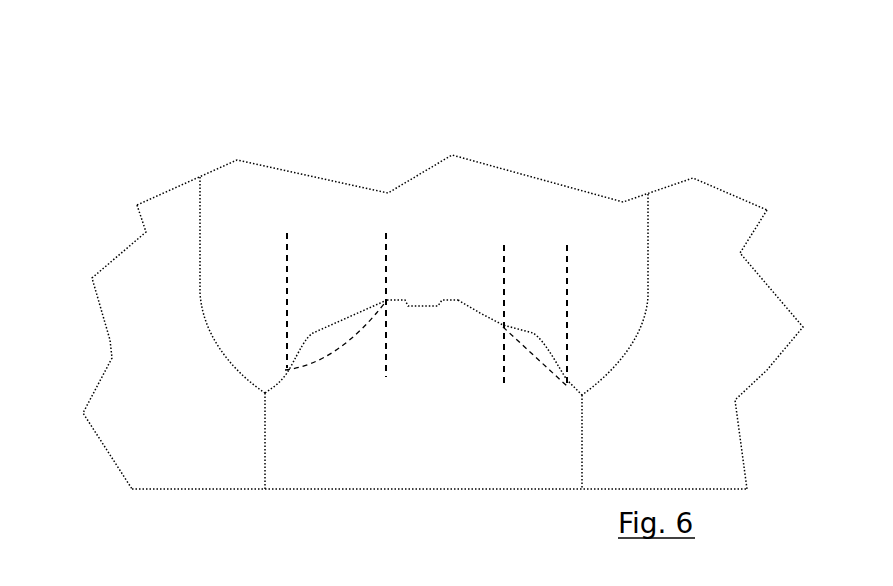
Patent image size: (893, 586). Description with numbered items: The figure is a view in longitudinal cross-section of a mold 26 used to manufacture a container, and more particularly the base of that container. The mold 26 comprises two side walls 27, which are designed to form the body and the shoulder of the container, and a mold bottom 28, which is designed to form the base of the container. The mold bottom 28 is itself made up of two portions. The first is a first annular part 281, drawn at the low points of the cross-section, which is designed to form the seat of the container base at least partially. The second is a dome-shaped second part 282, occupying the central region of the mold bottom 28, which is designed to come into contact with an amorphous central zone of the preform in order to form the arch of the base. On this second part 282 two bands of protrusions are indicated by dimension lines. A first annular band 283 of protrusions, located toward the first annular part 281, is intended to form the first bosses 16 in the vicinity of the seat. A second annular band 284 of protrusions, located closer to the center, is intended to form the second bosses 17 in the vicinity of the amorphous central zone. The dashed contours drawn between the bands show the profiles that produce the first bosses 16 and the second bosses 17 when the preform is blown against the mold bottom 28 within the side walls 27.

The mold 26 is at (608, 122).
The side walls 27 is at (137, 288).
The mold bottom 28 is at (500, 470).
The first annular part 281 is at (270, 400).
The dome-shaped second part 282 is at (442, 340).
The first annular band of protrusions 283 is at (565, 287).
The second annular band of protrusions 284 is at (384, 267).
The second bosses 17 is at (337, 350).
The first bosses 16 is at (530, 362).